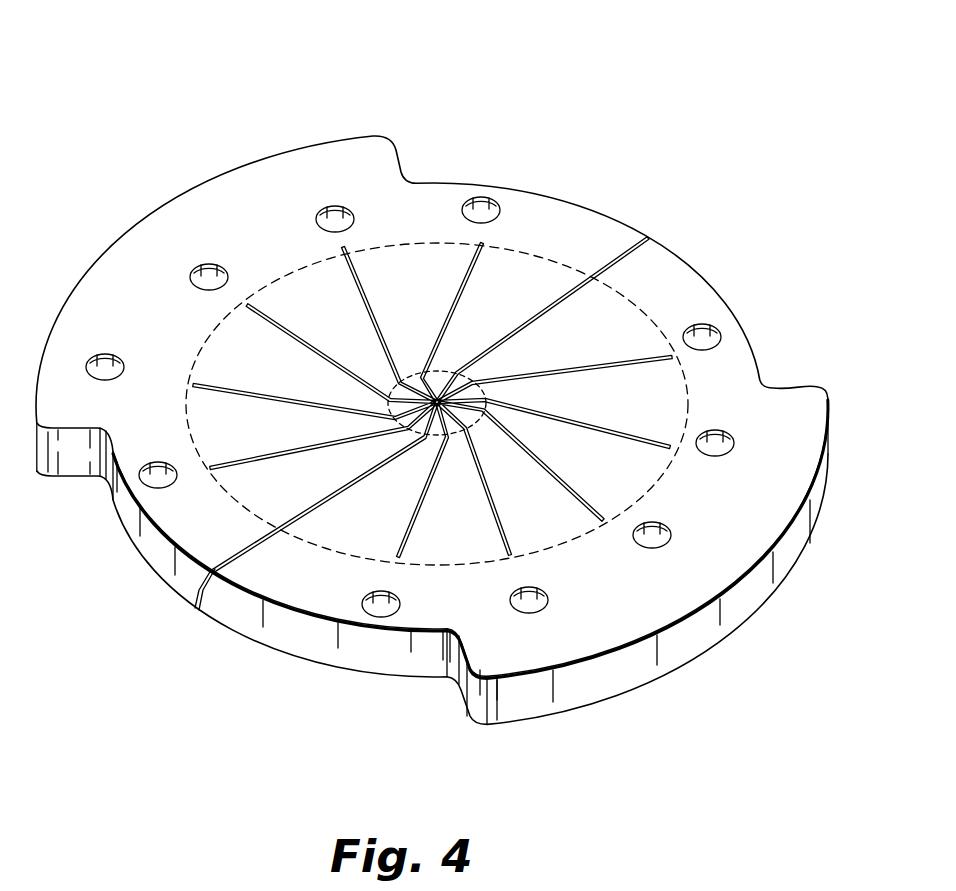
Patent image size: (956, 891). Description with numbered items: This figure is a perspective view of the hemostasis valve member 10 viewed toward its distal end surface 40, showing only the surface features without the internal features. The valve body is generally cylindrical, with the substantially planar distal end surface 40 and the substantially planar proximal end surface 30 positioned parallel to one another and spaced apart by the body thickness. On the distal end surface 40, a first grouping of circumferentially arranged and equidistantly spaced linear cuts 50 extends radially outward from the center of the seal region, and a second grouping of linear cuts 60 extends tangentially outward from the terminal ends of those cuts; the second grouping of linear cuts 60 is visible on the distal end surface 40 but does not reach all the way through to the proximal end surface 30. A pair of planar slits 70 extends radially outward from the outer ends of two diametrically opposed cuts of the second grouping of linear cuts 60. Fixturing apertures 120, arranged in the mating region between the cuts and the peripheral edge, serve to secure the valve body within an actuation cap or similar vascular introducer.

The hemostasis valve member 10 is at (167, 106).
The proximal end surface 30 is at (673, 678).
The distal end surface 40 is at (322, 152).
The first grouping of linear cuts 50 is at (449, 368).
The second grouping of linear cuts 60 is at (277, 272).
The planar slits 70 is at (618, 260).
The fixturing apertures 120 is at (478, 212).